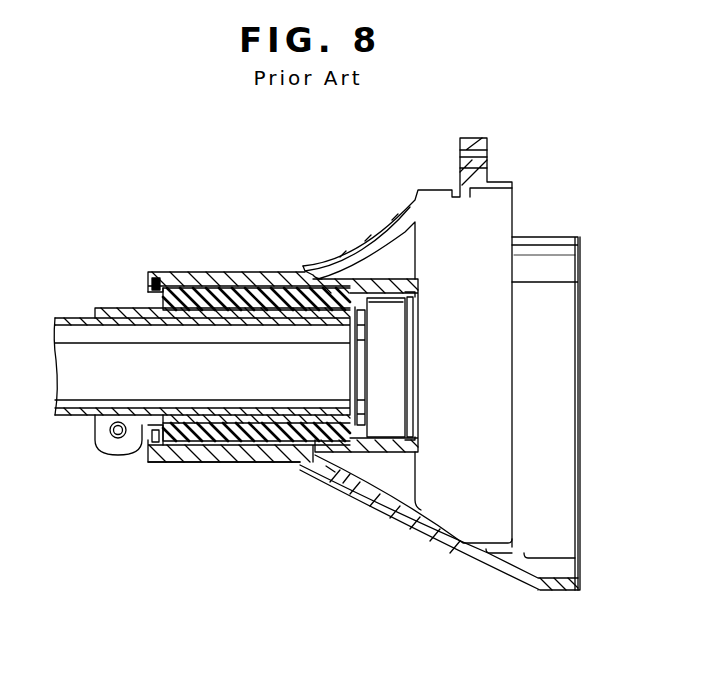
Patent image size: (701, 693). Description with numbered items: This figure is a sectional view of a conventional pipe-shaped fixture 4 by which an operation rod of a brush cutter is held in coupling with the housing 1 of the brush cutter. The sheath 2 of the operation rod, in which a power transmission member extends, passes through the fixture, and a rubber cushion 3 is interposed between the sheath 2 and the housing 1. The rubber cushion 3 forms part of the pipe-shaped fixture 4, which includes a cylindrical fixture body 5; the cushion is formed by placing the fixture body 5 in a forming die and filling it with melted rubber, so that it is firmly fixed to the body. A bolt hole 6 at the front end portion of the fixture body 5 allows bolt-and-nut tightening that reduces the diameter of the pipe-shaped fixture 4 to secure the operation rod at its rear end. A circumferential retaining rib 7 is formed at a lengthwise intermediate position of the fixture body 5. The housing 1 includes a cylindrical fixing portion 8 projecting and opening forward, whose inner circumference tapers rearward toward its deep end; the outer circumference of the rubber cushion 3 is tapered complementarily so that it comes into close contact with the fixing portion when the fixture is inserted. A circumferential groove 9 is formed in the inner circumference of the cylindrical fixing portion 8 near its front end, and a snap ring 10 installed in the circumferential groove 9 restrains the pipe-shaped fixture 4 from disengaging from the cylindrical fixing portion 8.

The housing 1 is at (516, 144).
The sheath of an operation rod 2 is at (63, 418).
The rubber cushion 3 is at (237, 276).
The pipe-shaped fixture 4 is at (128, 297).
The fixture body 5 is at (100, 308).
The bolt hole 6 is at (118, 439).
The circumferential retaining rib 7 is at (203, 447).
The cylindrical fixing portion 8 is at (248, 463).
The circumferential groove 9 is at (160, 456).
The snap ring 10 is at (160, 277).